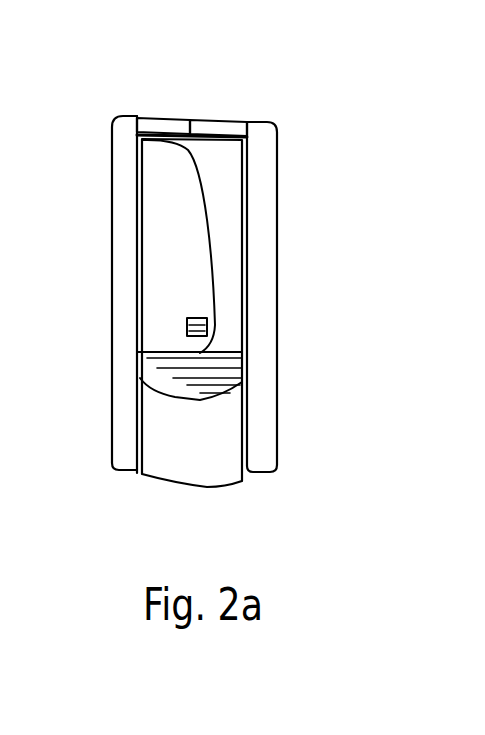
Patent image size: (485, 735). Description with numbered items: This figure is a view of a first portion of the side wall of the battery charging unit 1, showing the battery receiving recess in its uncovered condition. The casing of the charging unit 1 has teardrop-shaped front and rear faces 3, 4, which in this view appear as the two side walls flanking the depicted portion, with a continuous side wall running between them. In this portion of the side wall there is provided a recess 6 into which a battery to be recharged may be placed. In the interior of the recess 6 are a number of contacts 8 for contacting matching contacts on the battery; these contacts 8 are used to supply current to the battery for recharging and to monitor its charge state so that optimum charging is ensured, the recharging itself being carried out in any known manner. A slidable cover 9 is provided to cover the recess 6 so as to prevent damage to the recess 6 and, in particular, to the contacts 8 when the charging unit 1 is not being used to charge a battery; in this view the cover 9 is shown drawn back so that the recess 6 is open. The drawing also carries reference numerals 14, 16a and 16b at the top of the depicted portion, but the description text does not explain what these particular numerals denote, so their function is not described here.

The battery charging unit 1 is at (304, 176).
The front face 3 is at (110, 292).
The rear face 4 is at (278, 303).
The recess 6 is at (150, 198).
The contacts 8 is at (207, 322).
The slidable cover 9 is at (217, 430).
The housing 14 is at (393, 0).
The top cover section 16a is at (163, 127).
The top cover section 16b is at (217, 130).